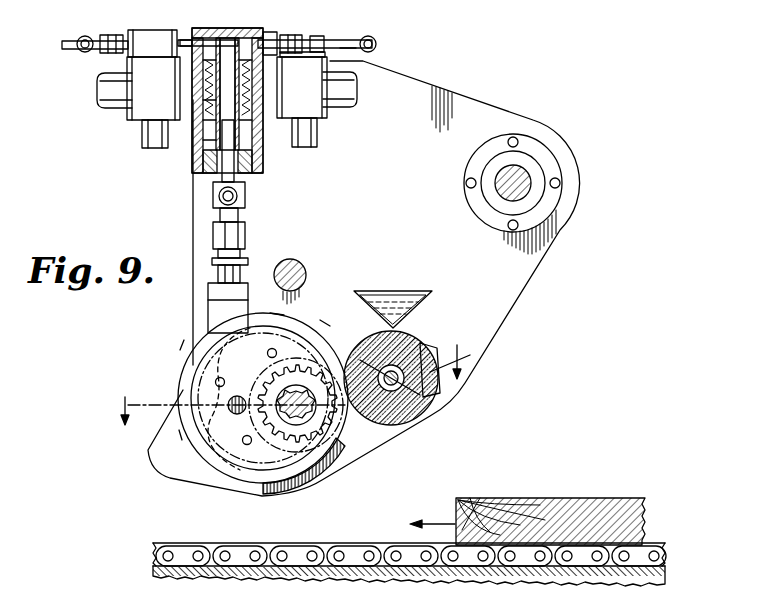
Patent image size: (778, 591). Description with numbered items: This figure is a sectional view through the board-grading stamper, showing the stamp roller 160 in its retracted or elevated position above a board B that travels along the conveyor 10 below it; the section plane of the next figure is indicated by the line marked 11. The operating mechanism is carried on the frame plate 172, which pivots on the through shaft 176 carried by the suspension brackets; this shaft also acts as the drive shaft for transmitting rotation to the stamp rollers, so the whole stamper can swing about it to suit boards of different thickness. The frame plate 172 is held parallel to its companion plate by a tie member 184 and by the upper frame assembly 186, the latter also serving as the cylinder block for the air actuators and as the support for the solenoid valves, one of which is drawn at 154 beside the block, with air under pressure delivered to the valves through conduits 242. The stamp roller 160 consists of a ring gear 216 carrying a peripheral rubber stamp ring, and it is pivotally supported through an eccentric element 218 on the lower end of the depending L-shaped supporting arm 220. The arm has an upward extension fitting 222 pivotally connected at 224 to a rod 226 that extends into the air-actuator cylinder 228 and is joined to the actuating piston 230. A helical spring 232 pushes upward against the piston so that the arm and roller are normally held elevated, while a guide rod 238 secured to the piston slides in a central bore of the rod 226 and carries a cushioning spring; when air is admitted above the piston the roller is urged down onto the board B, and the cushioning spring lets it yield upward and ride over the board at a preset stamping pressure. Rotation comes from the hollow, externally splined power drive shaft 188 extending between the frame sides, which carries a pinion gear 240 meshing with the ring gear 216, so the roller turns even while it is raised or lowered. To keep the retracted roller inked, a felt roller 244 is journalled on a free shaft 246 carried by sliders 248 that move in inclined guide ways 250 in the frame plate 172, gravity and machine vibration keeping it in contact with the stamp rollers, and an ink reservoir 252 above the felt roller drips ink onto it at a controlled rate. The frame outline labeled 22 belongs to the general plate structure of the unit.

The conveyor 10 is at (662, 567).
The section line 11- 11 is at (292, 383).
The frame plate 22 is at (553, 327).
The solenoid valve 154 is at (140, 103).
The stamp roller 160 is at (330, 115).
The frame plate 172 is at (414, 189).
The through shaft 176 is at (522, 185).
The tie member 184 is at (302, 267).
The upper frame assembly 186 is at (263, 150).
The power drive shaft 188 is at (298, 400).
The ring gear 216 is at (305, 430).
The eccentric element 218 is at (236, 412).
The supporting arm 220 is at (210, 311).
The extension fitting 222 is at (246, 236).
The pivotal connection 224 is at (220, 201).
The rod 226 is at (238, 183).
The air-actuator cylinder 228 is at (263, 152).
The actuating piston 230 is at (195, 135).
The helical spring 232 is at (195, 155).
The guide rod 238 is at (236, 60).
The pinion gear 240 is at (320, 425).
The conduits 242 is at (86, 37).
The felt roller 244 is at (400, 425).
The free shaft 246 is at (430, 398).
The sliders 248 is at (405, 365).
The inclined guide ways 250 is at (442, 388).
The ink reservoir 252 is at (379, 291).
The board B is at (576, 497).